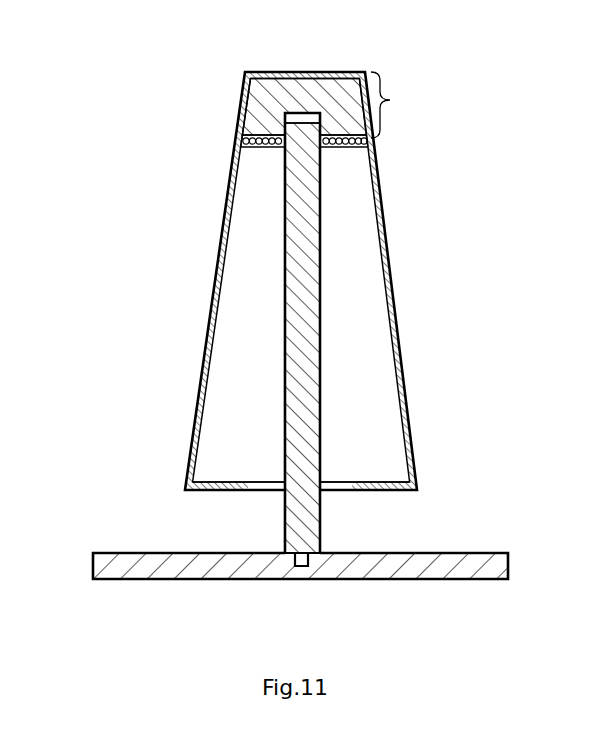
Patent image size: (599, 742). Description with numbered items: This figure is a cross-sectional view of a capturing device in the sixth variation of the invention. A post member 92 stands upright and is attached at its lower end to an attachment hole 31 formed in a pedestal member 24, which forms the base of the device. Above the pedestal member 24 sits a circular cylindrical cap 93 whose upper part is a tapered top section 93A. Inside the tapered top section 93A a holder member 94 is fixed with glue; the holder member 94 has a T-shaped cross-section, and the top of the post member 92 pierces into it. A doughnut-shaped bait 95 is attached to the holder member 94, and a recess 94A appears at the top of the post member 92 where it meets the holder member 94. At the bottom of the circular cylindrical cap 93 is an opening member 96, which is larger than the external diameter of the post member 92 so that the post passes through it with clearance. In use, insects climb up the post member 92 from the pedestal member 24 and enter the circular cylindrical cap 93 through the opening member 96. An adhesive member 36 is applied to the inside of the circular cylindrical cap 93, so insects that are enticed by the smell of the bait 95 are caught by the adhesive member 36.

The pedestal member 24 is at (433, 553).
The attachment hole 31 is at (301, 568).
The adhesive member 36 is at (374, 223).
The post member 92 is at (288, 520).
The circular cylindrical cap 93 is at (402, 339).
The tapered top section 93A is at (401, 105).
The holder member 94 is at (303, 84).
The recess 94A is at (292, 117).
The bait 95 is at (258, 149).
The opening member 96 is at (333, 489).